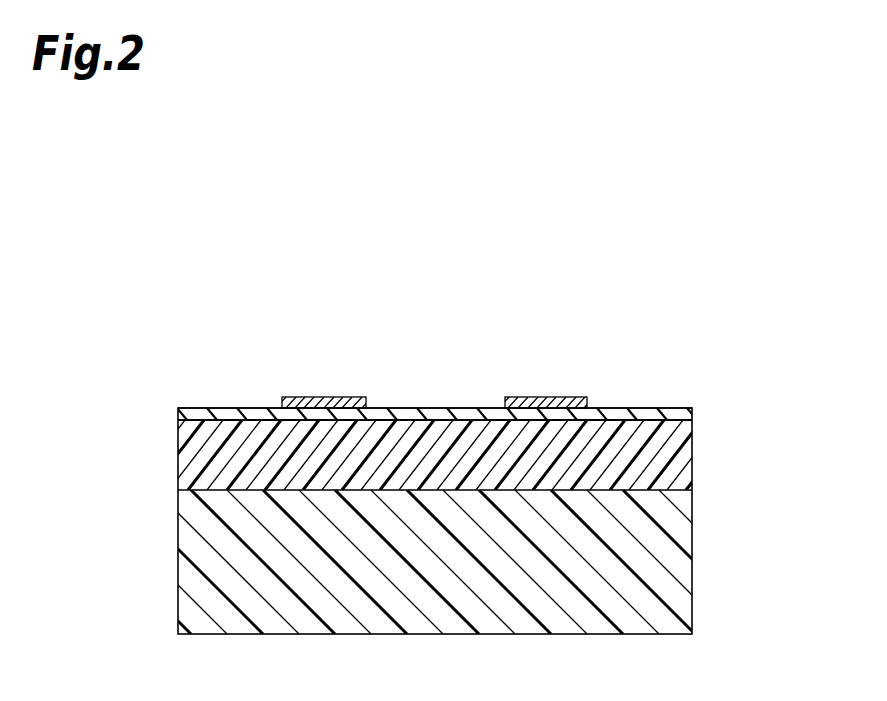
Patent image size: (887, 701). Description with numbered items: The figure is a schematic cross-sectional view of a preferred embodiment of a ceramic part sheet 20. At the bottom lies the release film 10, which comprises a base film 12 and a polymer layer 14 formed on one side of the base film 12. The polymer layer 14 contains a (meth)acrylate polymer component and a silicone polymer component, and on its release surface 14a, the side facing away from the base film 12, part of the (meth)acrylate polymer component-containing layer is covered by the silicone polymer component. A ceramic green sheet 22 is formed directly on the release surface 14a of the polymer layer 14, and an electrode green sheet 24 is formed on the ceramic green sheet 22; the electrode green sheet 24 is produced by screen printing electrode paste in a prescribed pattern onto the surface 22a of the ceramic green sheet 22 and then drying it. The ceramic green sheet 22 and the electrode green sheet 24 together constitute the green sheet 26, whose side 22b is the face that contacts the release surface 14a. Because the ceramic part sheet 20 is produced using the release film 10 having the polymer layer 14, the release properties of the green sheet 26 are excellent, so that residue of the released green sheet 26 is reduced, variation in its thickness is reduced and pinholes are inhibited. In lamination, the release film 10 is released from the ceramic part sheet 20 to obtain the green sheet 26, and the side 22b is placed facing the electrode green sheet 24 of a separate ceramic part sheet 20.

The release film 10 is at (435, 527).
The base film 12 is at (680, 558).
The polymer layer 14 is at (451, 455).
The release surface 14a is at (648, 416).
The ceramic part sheet 20 is at (655, 298).
The ceramic green sheet 22 is at (692, 410).
The surface of ceramic green sheet 22a is at (198, 408).
The side of green sheet 22b is at (232, 421).
The electrode green sheet 24 is at (307, 397).
The green sheet 26 is at (361, 368).